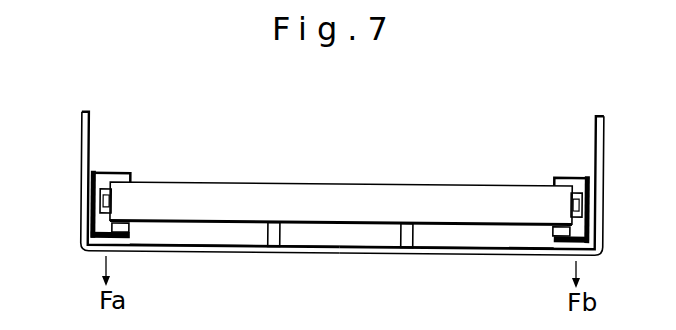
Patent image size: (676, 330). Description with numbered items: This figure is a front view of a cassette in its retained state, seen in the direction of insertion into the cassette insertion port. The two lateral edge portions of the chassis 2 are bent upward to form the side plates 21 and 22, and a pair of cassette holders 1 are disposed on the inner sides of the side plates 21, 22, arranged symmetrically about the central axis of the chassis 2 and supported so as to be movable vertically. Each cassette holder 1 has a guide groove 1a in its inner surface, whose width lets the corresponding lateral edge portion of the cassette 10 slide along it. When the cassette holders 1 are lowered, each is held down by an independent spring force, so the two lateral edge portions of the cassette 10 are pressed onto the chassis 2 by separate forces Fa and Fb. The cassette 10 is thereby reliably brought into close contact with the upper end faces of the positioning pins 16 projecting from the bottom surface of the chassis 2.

The cassette holder 1 is at (106, 180).
The guide groove 1a is at (122, 219).
The chassis 2 is at (350, 253).
The cassette 10 is at (301, 182).
The positioning pin 16 is at (268, 233).
The side plate 21 is at (81, 123).
The side plate 22 is at (602, 140).